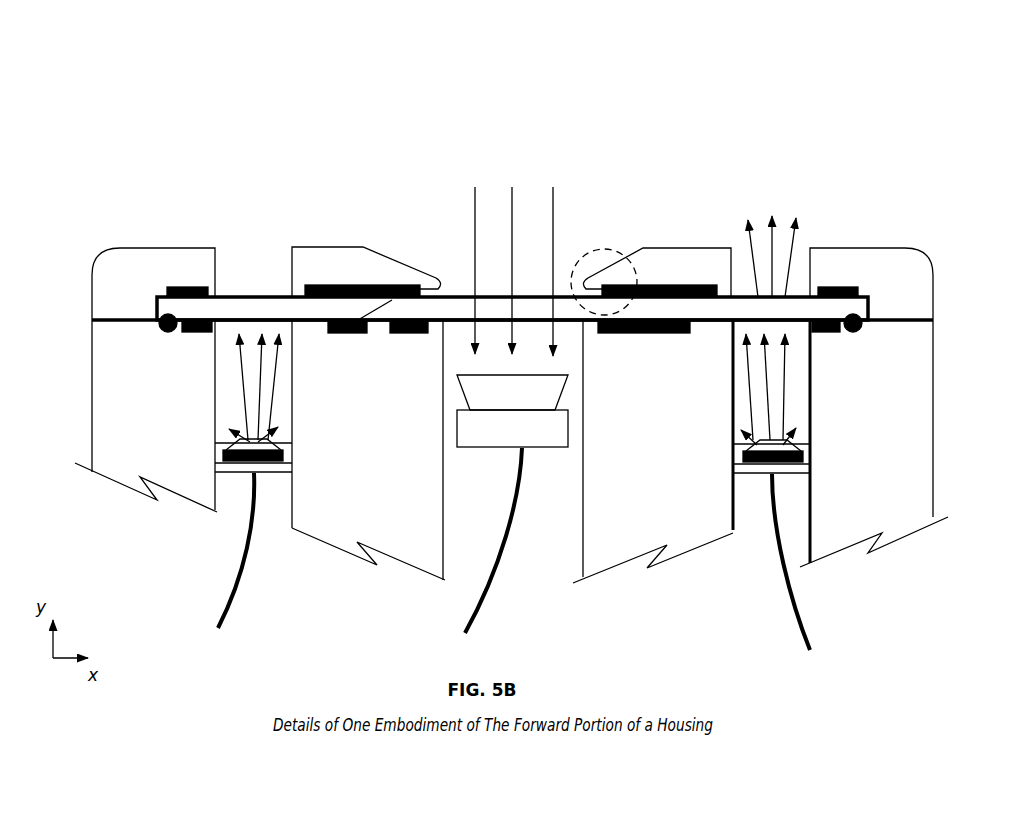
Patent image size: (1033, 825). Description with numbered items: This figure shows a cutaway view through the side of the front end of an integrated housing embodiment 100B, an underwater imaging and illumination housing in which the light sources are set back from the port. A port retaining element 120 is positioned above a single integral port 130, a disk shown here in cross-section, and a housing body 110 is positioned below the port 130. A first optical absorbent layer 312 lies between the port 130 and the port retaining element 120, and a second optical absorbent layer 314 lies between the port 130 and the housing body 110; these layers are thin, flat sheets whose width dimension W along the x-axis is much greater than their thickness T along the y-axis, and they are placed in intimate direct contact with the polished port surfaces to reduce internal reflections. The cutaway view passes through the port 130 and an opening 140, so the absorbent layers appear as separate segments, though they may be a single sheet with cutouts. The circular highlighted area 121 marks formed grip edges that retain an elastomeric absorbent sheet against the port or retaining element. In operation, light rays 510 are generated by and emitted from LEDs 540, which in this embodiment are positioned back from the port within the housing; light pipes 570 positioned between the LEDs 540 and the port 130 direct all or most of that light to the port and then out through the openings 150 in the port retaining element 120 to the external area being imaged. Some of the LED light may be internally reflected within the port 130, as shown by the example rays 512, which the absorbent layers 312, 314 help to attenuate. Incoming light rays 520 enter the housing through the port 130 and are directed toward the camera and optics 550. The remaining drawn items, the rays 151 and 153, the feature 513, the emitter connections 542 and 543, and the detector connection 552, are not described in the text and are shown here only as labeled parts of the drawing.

The integrated housing embodiment 100B is at (124, 106).
The housing body 110 is at (165, 463).
The port retaining element 120 is at (103, 288).
The circular highlighted area 121 is at (610, 247).
The single integral port 130 is at (448, 297).
The opening 140 is at (428, 246).
The openings in port retaining element 150 is at (812, 232).
The light rays from emitter 151 is at (227, 368).
The scattered light rays 153 is at (223, 427).
The first optical absorbent layer 312 is at (350, 284).
The second optical absorbent layer 314 is at (615, 333).
The light rays 510 is at (254, 196).
The internally reflected rays 512 is at (307, 300).
The gap 513 is at (381, 324).
The entering light rays 520 is at (514, 257).
The LEDs 540 is at (238, 466).
The emitter cable 542 is at (245, 552).
The emitter mounting board 543 is at (293, 472).
The camera and optics 550 is at (498, 441).
The detector cable 552 is at (500, 550).
The light pipes 570 is at (293, 406).
The width dimension W is at (657, 333).
The thickness T is at (687, 322).